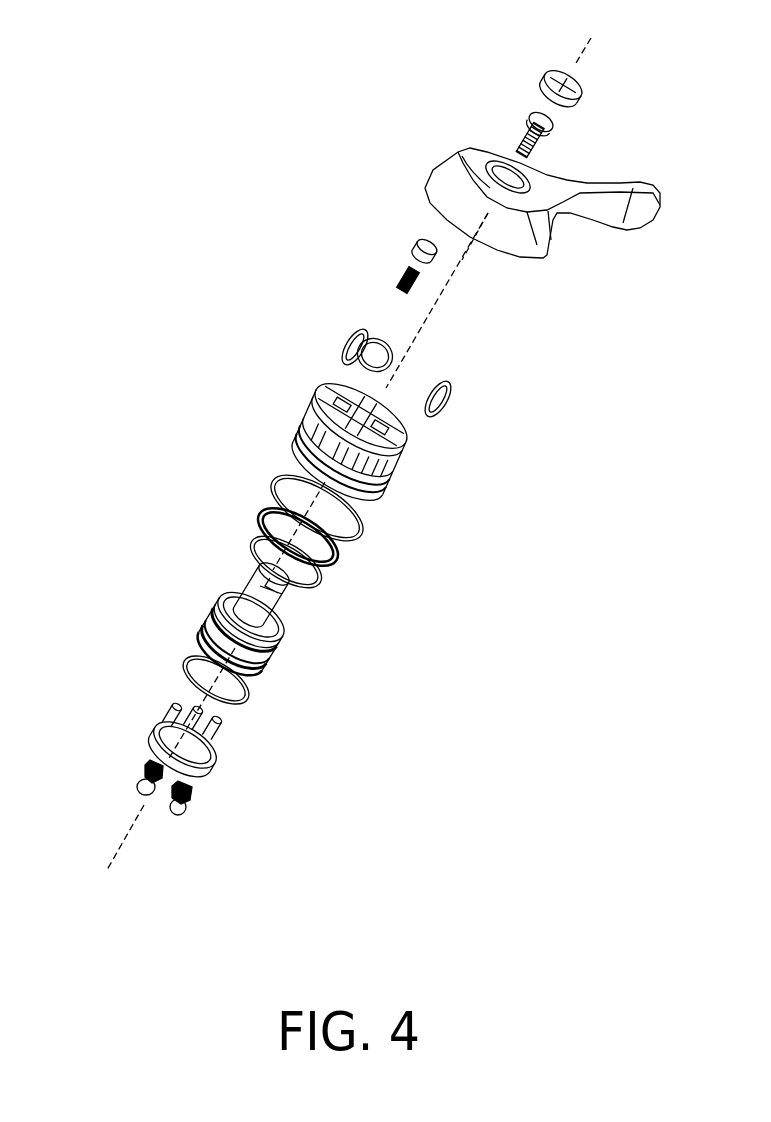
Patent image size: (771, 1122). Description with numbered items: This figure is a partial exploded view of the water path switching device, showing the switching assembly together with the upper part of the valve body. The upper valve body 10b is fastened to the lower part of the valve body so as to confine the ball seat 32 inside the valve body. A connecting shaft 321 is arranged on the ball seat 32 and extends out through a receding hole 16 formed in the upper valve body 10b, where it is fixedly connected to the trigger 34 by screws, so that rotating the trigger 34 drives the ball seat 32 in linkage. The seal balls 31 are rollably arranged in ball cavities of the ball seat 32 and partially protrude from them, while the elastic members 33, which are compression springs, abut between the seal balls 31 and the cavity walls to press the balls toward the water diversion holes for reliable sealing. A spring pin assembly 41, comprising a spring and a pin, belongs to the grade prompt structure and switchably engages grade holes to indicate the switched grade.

The trigger 34 is at (455, 128).
The spring pin assembly 41 is at (402, 267).
The upper valve body 10b is at (320, 407).
The receding hole 16 is at (402, 440).
The connecting shaft 321 is at (248, 583).
The ball seat 32 is at (217, 623).
The elastic member 33 is at (140, 767).
The seal ball 31 is at (133, 790).